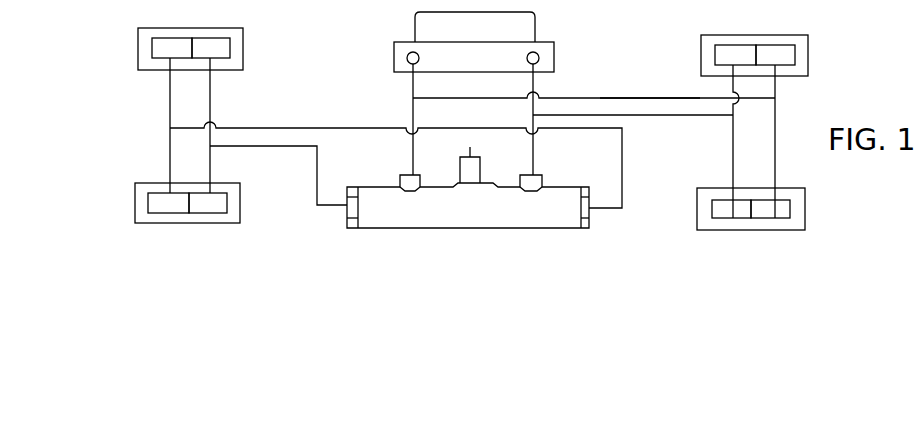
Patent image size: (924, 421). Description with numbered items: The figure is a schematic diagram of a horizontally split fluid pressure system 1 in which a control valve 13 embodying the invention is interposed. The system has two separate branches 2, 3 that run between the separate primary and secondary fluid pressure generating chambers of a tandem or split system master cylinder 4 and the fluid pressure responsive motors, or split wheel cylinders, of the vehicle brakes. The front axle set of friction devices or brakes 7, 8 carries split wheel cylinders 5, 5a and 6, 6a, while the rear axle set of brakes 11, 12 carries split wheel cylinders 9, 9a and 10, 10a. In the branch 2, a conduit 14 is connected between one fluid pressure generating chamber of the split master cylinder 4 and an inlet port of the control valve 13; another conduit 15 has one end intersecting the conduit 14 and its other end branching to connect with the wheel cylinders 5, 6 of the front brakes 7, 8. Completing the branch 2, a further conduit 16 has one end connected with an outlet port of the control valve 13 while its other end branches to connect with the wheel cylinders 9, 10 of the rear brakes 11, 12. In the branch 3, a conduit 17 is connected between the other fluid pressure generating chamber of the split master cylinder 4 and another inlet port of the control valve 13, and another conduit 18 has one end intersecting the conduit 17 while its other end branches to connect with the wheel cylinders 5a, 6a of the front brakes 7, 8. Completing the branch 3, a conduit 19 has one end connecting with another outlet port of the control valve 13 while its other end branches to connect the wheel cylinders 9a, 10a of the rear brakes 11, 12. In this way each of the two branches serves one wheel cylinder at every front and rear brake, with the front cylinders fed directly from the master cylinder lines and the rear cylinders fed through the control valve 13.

The horizontally split fluid pressure system 1 is at (341, 37).
The branch 2 is at (649, 168).
The branch 3 is at (306, 102).
The split system master cylinder 4 is at (480, 36).
The split wheel cylinder 5 is at (733, 52).
The split wheel cylinder 5a is at (777, 52).
The split wheel cylinder 6 is at (733, 216).
The split wheel cylinder 6a is at (773, 216).
The front brake 7 is at (800, 58).
The front brake 8 is at (800, 210).
The split wheel cylinder 9 is at (170, 46).
The split wheel cylinder 9a is at (216, 46).
The split wheel cylinder 10 is at (170, 208).
The split wheel cylinder 10a is at (210, 208).
The rear brake 11 is at (145, 50).
The rear brake 12 is at (141, 205).
The control valve 13 is at (480, 219).
The conduit 14 is at (534, 158).
The conduit 15 is at (672, 116).
The conduit 16 is at (349, 129).
The conduit 17 is at (413, 113).
The conduit 18 is at (666, 98).
The conduit 19 is at (280, 148).